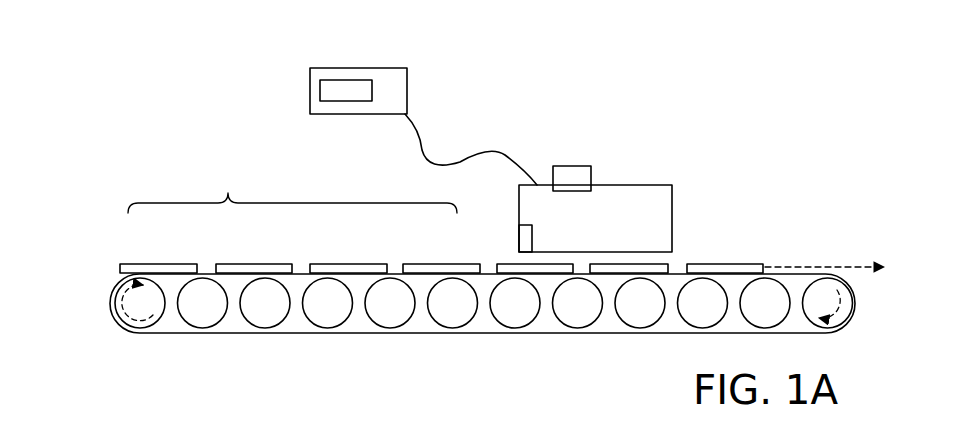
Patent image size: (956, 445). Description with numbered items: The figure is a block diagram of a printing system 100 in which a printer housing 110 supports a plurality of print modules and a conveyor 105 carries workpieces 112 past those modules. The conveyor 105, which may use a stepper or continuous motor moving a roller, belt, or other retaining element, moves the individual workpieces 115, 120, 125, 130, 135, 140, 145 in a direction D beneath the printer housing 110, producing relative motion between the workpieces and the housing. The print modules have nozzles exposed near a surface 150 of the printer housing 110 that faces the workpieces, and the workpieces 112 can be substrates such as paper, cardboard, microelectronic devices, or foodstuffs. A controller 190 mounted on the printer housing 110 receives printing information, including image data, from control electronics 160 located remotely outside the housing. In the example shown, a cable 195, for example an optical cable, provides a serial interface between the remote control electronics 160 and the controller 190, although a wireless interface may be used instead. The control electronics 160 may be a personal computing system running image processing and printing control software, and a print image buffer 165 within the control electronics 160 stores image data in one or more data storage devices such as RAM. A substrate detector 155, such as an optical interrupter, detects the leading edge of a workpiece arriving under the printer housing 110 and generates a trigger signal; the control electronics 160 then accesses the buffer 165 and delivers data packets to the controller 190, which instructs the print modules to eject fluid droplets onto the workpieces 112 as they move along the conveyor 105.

The printing system 100 is at (793, 178).
The conveyor 105 is at (457, 333).
The printer housing 110 is at (672, 185).
The workpieces 112 is at (321, 220).
The workpiece 115 is at (128, 263).
The workpiece 120 is at (243, 263).
The workpiece 125 is at (325, 263).
The workpiece 130 is at (420, 263).
The workpiece 135 is at (507, 263).
The workpiece 140 is at (670, 263).
The workpiece 145 is at (757, 263).
The surface of the printer housing 150 is at (633, 250).
The substrate detector 155 is at (519, 227).
The control electronics 160 is at (365, 68).
The print image buffer 165 is at (328, 90).
The controller 190 is at (555, 165).
The cable 195 is at (420, 145).
The direction D is at (845, 265).